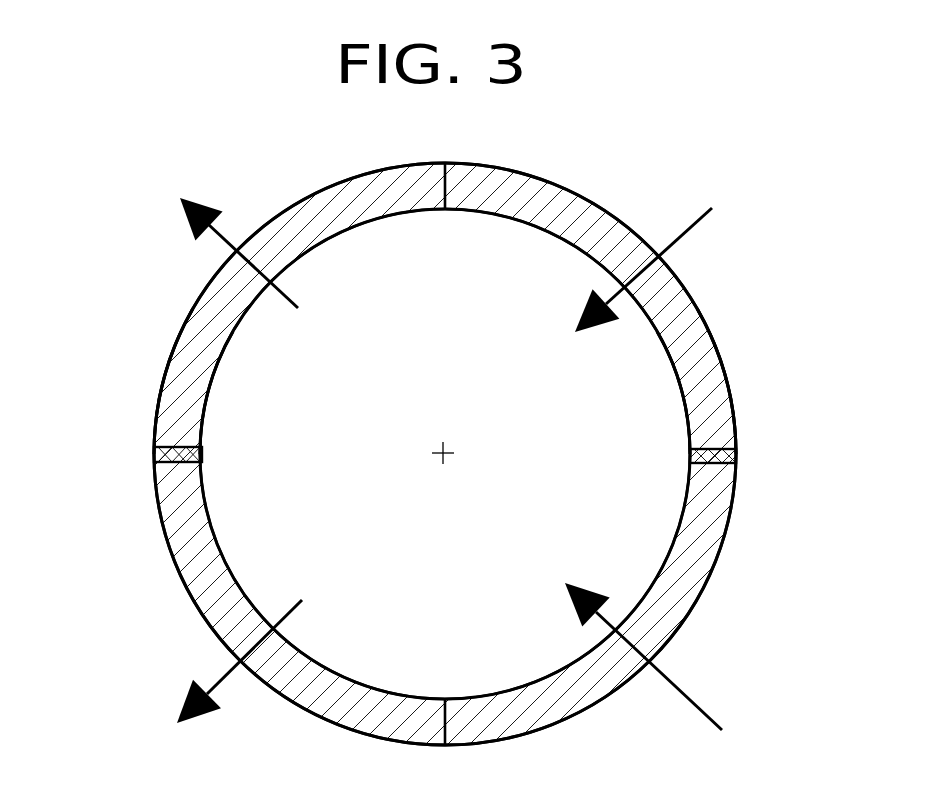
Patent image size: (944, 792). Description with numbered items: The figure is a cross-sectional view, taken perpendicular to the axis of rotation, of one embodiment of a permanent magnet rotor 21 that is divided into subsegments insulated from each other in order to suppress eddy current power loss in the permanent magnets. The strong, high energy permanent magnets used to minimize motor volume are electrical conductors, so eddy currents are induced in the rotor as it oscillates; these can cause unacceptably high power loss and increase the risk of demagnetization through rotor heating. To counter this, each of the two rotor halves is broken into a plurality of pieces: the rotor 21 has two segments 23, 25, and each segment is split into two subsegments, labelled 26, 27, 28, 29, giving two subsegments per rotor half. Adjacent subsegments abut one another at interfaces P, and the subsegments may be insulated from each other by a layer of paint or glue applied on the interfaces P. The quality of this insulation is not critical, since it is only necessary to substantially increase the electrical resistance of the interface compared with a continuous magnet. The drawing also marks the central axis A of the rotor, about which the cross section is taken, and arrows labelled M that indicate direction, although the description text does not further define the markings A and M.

The rotor 21 is at (577, 195).
The rotor segment 23 is at (682, 322).
The rotor segment 25 is at (195, 340).
The subsegment 26 is at (713, 398).
The subsegment 27 is at (703, 565).
The subsegment 28 is at (193, 560).
The subsegment 29 is at (185, 393).
The interface P is at (154, 455).
The axis A is at (466, 472).
The direction of movement M is at (450, 461).